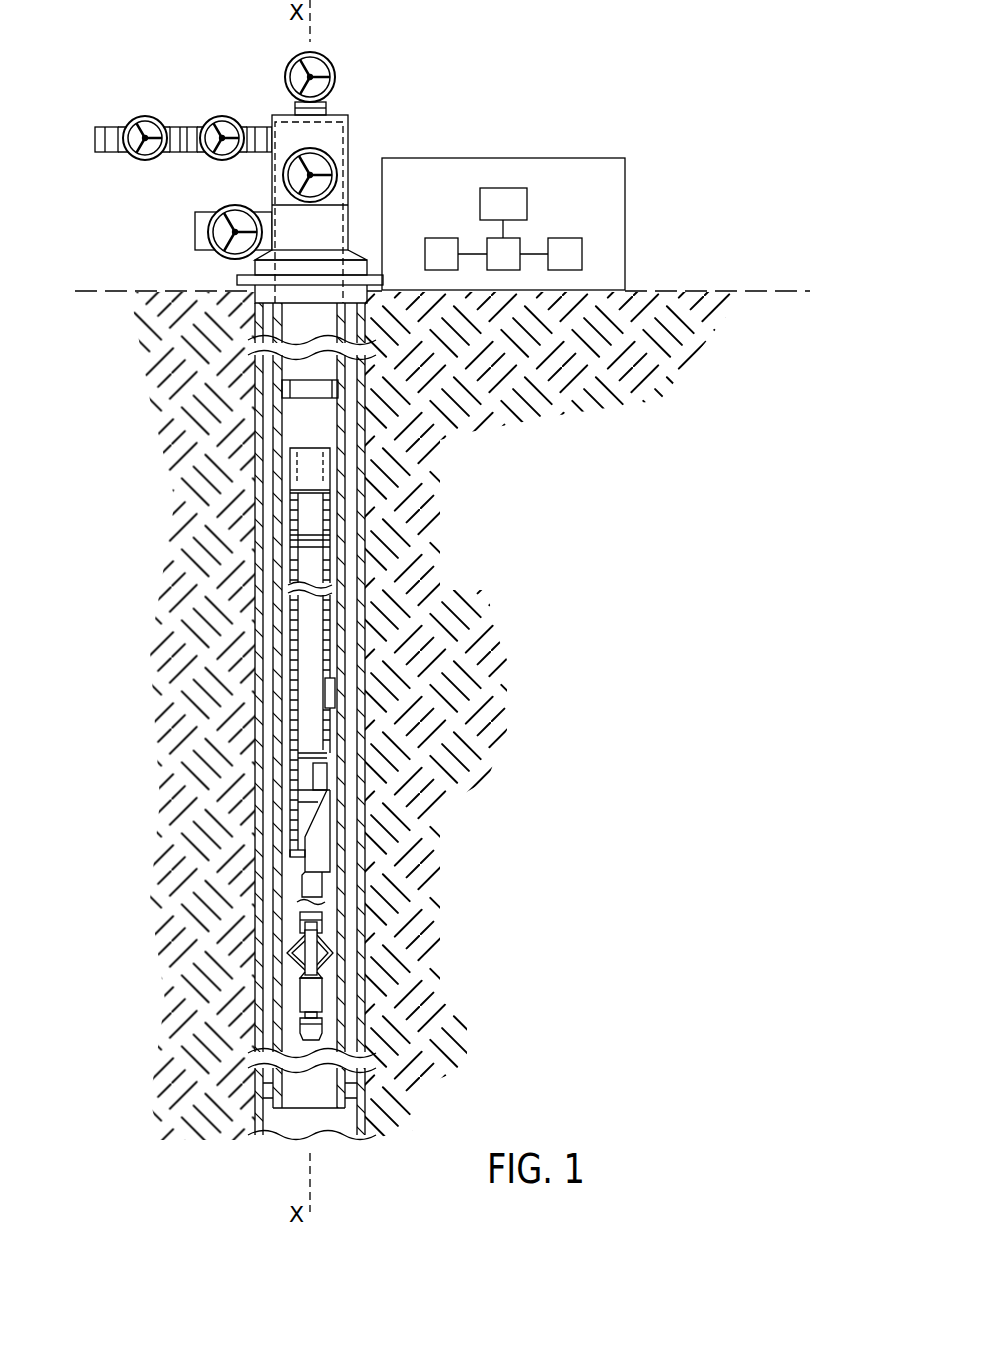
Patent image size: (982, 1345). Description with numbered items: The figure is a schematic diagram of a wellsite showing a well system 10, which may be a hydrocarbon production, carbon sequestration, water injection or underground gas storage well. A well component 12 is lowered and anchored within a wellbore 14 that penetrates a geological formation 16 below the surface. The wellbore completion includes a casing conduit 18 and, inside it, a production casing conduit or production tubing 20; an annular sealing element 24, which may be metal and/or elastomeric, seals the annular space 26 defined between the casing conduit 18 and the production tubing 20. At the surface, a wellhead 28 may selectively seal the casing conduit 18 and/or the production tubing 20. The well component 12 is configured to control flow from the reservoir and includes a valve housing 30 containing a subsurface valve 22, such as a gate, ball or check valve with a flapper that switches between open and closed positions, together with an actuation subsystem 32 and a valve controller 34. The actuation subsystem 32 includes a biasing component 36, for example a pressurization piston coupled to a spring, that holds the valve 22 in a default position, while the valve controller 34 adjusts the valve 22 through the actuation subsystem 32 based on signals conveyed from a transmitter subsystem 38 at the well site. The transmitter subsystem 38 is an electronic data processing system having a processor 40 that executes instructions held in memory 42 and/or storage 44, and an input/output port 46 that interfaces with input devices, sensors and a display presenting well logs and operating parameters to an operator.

The well system 10 is at (606, 72).
The well component 12 is at (414, 718).
The wellbore 14 is at (160, 290).
The geological formation 16 is at (590, 490).
The casing conduit 18 is at (370, 448).
The production tubing 20 is at (350, 503).
The valve 22 is at (329, 778).
The annular sealing element 24 is at (267, 1098).
The annular space 26 is at (288, 513).
The wellhead 28 is at (283, 113).
The valve housing 30 is at (336, 634).
The actuation subsystem 32 is at (316, 728).
The valve controller 34 is at (322, 912).
The biasing component 36 is at (336, 690).
The transmitter subsystem 38 is at (503, 158).
The processor 40 is at (487, 240).
The memory 42 is at (425, 254).
The storage 44 is at (560, 238).
The input/output (I/O) port 46 is at (503, 188).